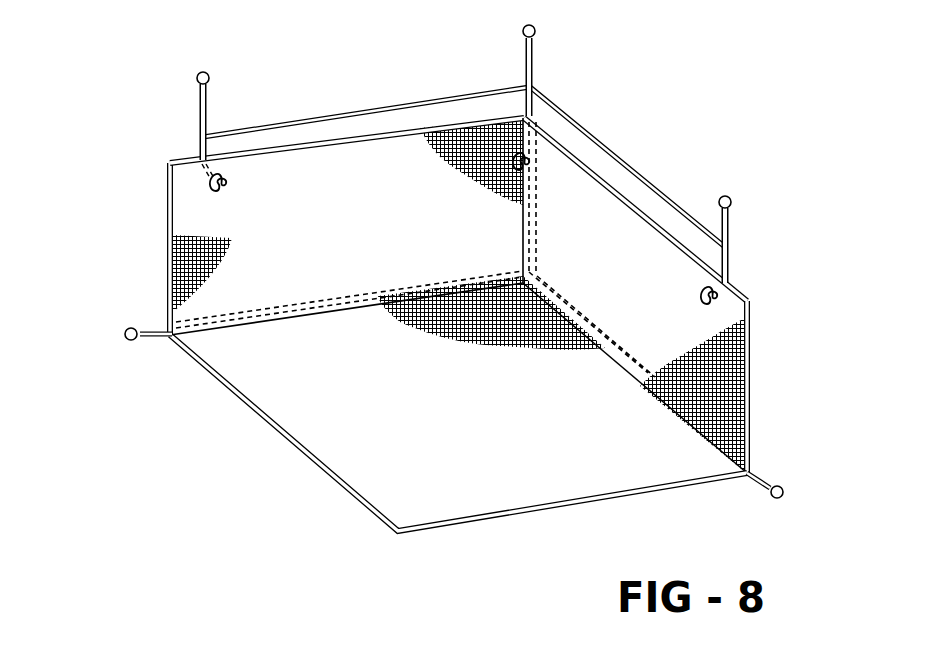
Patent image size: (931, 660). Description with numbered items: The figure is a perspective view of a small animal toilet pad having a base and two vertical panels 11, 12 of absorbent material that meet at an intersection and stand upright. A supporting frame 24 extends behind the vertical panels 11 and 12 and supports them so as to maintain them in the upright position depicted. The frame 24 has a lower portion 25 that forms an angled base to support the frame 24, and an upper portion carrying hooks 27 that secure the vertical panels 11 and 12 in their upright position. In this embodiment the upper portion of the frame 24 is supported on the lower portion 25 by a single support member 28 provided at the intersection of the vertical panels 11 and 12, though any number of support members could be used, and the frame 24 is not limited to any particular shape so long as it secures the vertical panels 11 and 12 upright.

The vertical panel 11 is at (180, 214).
The vertical panel 12 is at (641, 258).
The supporting frame 24 is at (190, 122).
The lower portion 25 is at (362, 110).
The hook 27 is at (622, 160).
The support member 28 is at (528, 236).